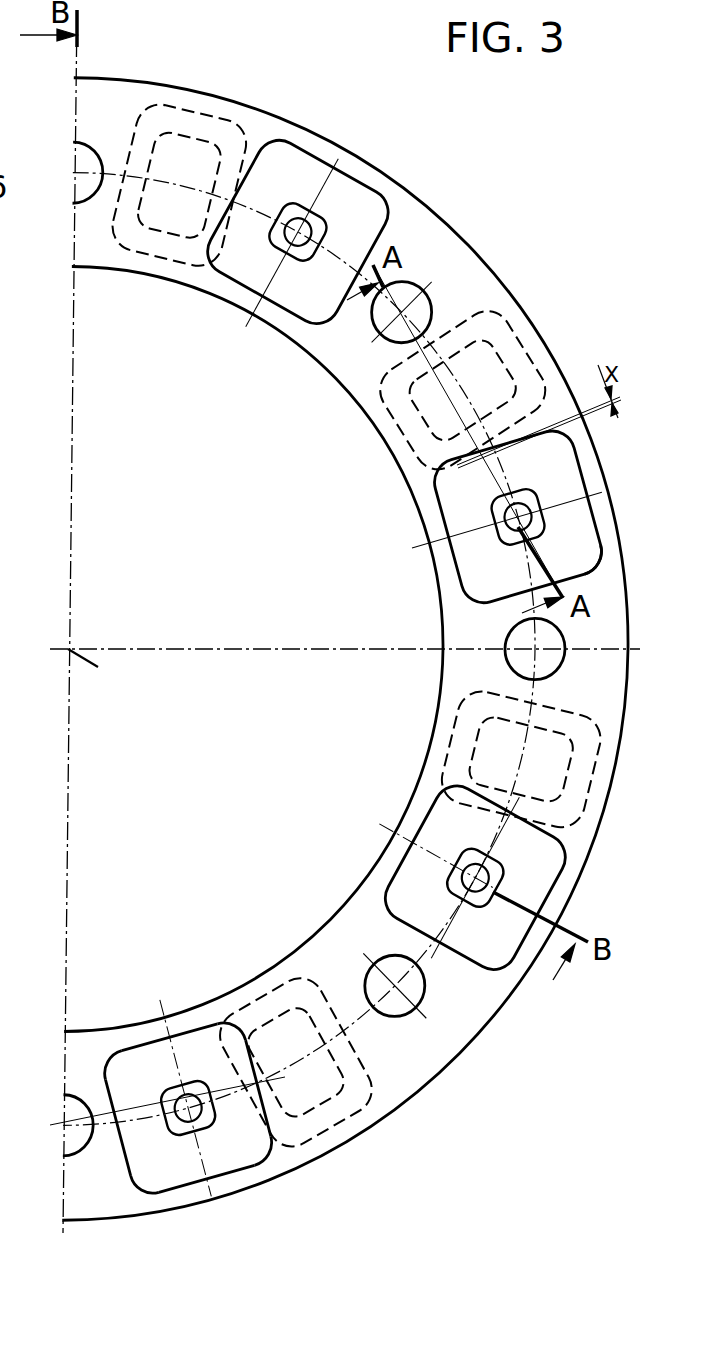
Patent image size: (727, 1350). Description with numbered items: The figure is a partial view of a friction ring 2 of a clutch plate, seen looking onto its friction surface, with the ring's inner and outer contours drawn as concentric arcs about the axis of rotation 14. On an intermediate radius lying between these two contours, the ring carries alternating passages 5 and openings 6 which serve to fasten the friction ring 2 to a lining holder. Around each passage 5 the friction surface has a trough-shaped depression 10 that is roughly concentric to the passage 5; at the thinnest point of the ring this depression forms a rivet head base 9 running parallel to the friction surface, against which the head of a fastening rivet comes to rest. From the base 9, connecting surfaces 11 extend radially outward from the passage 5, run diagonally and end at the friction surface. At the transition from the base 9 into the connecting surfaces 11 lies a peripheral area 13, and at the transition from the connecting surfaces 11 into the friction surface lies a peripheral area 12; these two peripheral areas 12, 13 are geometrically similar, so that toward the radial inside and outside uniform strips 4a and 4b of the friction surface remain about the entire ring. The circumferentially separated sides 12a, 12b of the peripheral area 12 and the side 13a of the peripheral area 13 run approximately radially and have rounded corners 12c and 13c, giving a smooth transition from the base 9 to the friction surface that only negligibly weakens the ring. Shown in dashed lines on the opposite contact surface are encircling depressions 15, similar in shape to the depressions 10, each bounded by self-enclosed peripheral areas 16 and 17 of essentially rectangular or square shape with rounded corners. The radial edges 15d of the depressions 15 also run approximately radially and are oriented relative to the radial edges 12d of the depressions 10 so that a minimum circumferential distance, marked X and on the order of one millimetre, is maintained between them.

The friction ring 2 is at (353, 658).
The strip of the friction surface 4a is at (255, 649).
The strip of the friction surface 4b is at (348, 649).
The passage 5 is at (518, 516).
The opening 6 is at (410, 287).
The rivet head base 9 is at (517, 517).
The trough-shaped depression 10 is at (406, 833).
The connecting surface 11 is at (490, 523).
The peripheral area 12 is at (586, 560).
The circumferentially separated side of the peripheral area 12a is at (170, 1037).
The circumferentially separated side of the peripheral area 12b is at (207, 1178).
The rounded corner 12c is at (188, 1107).
The radial edge of the depression 12d is at (187, 1108).
The peripheral area 13 is at (507, 520).
The circumferentially separated side of the peripheral area 13a is at (184, 1096).
The rounded corner 13c is at (190, 1119).
The axis of rotation 14 is at (60, 663).
The depression 15 is at (472, 769).
The radial edge of the depression 15d is at (278, 1112).
The peripheral area 16 is at (521, 760).
The peripheral area 17 is at (453, 743).